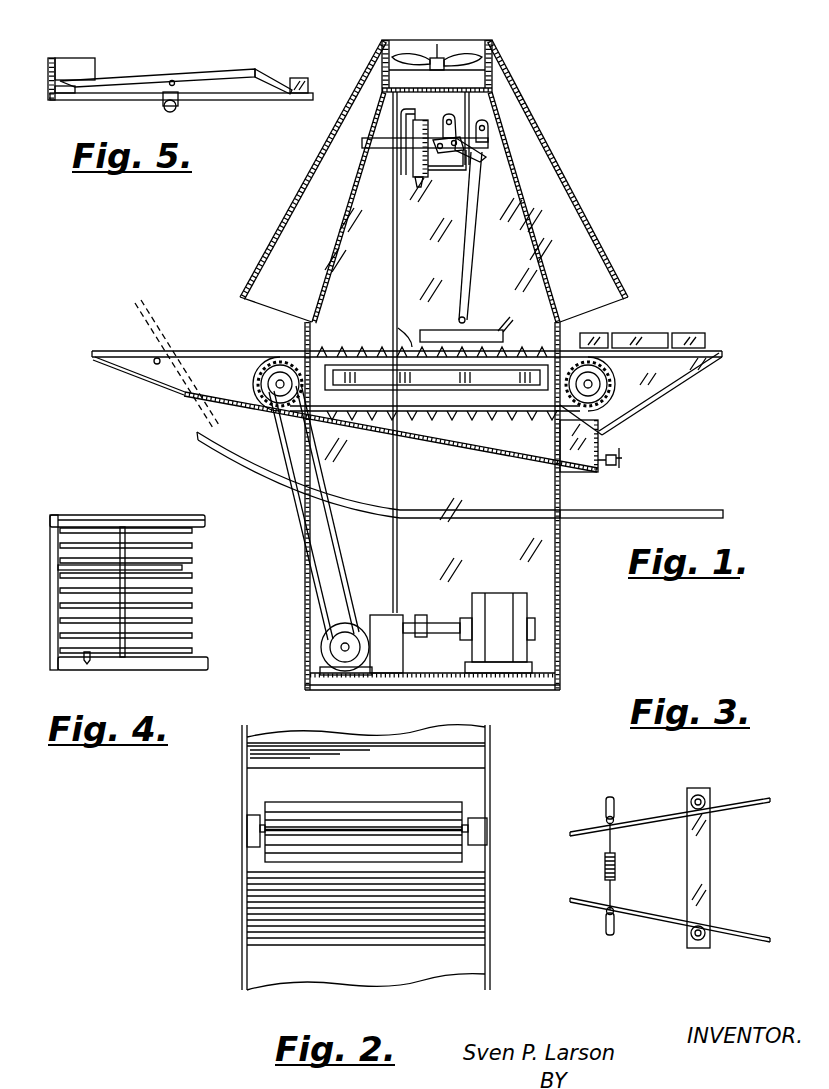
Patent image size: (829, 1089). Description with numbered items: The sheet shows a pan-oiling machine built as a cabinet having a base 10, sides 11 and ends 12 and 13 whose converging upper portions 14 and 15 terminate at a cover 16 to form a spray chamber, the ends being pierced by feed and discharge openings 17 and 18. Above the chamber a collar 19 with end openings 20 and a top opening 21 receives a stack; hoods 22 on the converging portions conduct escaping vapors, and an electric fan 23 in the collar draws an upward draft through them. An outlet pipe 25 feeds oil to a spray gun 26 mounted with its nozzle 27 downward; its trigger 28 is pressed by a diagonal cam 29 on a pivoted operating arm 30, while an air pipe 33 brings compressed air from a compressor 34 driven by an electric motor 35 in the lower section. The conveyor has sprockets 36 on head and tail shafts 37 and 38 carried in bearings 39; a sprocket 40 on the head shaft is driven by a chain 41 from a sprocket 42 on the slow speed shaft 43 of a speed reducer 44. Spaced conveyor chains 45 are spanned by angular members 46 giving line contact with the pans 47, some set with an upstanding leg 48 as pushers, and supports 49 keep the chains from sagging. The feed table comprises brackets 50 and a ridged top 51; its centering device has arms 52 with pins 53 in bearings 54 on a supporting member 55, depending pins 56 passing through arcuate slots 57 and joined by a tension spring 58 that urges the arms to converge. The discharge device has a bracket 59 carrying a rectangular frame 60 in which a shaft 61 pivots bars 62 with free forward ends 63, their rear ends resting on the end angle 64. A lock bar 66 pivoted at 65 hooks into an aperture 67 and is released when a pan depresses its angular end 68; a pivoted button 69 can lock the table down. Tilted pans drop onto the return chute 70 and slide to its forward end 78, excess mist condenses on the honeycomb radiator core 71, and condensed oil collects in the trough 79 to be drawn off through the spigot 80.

In FIG. 1, the base 10 is at (545, 690).
In FIG. 1, the sides 11 is at (372, 281).
In FIG. 2, the sides 11 is at (242, 870).
In FIG. 1, the end 12 is at (560, 598).
In FIG. 1, the end 13 is at (305, 590).
In FIG. 1, the converging upper portion 14 is at (533, 228).
In FIG. 1, the converging upper portion 15 is at (342, 218).
In FIG. 1, the cover 16 is at (437, 78).
In FIG. 1, the feed opening 17 is at (562, 330).
In FIG. 1, the discharge opening 18 is at (323, 320).
In FIG. 2, the discharge opening 18 is at (478, 782).
In FIG. 1, the collar 19 is at (400, 78).
In FIG. 1, the openings 20 is at (434, 206).
In FIG. 1, the opening 21 is at (443, 40).
In FIG. 1, the hoods 22 is at (318, 281).
In FIG. 2, the hoods 22 is at (480, 735).
In FIG. 1, the electric fan 23 is at (420, 52).
In FIG. 1, the outlet pipe 25 is at (432, 134).
In FIG. 1, the spray gun 26 is at (413, 170).
In FIG. 1, the nozzle 27 is at (419, 188).
In FIG. 1, the trigger 28 is at (458, 168).
In FIG. 1, the diagonal cam 29 is at (490, 140).
In FIG. 1, the operating arm 30 is at (476, 206).
In FIG. 1, the air pipe 33 is at (387, 155).
In FIG. 1, the air compressor 34 is at (395, 653).
In FIG. 1, the electric motor 35 is at (495, 600).
In FIG. 1, the sprockets 36 is at (258, 380).
In FIG. 1, the head shaft 37 is at (278, 382).
In FIG. 1, the tail shaft 38 is at (600, 388).
In FIG. 1, the bearings 39 is at (262, 398).
In FIG. 1, the sprocket 40 is at (301, 515).
In FIG. 1, the chain 41 is at (345, 562).
In FIG. 1, the sprocket 42 is at (333, 633).
In FIG. 1, the slow speed shaft 43 is at (343, 648).
In FIG. 1, the speed reducer 44 is at (360, 668).
In FIG. 1, the conveyor chains 45 is at (370, 348).
In FIG. 1, the angular members 46 is at (500, 412).
In FIG. 2, the angular members 46 is at (310, 803).
In FIG. 1, the pans 47 is at (412, 325).
In FIG. 1, the upstanding leg 48 is at (462, 420).
In FIG. 1, the supports 49 is at (482, 329).
In FIG. 1, the brackets 50 is at (690, 384).
In FIG. 1, the top 51 is at (720, 351).
In FIG. 1, the arms 52 is at (655, 335).
In FIG. 3, the arms 52 is at (637, 826).
In FIG. 3, the pins 53 is at (706, 795).
In FIG. 3, the bearings 54 is at (698, 795).
In FIG. 3, the supporting member 55 is at (710, 855).
In FIG. 3, the depending pins 56 is at (605, 818).
In FIG. 3, the arcuate slots 57 is at (608, 797).
In FIG. 3, the tension spring 58 is at (616, 868).
In FIG. 1, the bracket 59 is at (139, 377).
In FIG. 1, the rectangular frame 60 is at (393, 367).
In FIG. 4, the rectangular frame 60 is at (88, 515).
In FIG. 4, the shaft 61 is at (124, 535).
In FIG. 5, the shaft 61 is at (163, 104).
In FIG. 4, the bars 62 is at (168, 660).
In FIG. 5, the bars 62 is at (218, 100).
In FIG. 4, the forward ends 63 is at (192, 515).
In FIG. 5, the forward ends 63 is at (302, 78).
In FIG. 4, the end angle 64 is at (50, 530).
In FIG. 5, the end angle 64 is at (50, 64).
In FIG. 5, the pivot 65 is at (174, 80).
In FIG. 4, the lock bar 66 is at (182, 567).
In FIG. 5, the lock bar 66 is at (132, 80).
In FIG. 5, the aperture 67 is at (66, 100).
In FIG. 5, the angular end 68 is at (258, 69).
In FIG. 4, the pivoted button 69 is at (88, 662).
In FIG. 1, the return chute 70 is at (365, 507).
In FIG. 1, the honeycomb radiator core 71 is at (420, 390).
In FIG. 1, the forward end 78 is at (700, 510).
In FIG. 1, the collector trough 79 is at (366, 387).
In FIG. 1, the spigot 80 is at (620, 468).